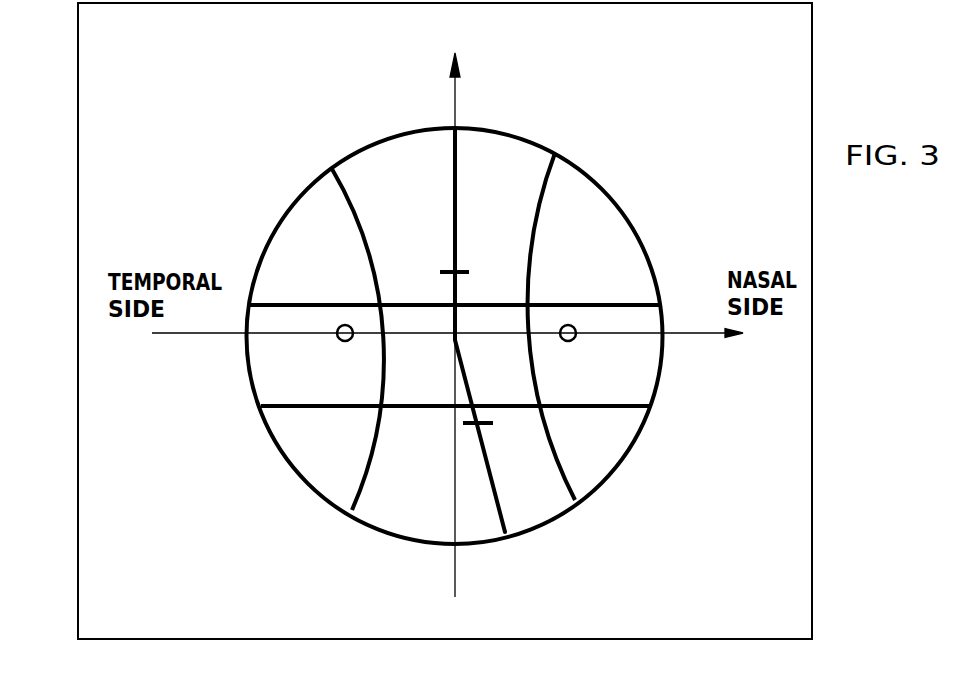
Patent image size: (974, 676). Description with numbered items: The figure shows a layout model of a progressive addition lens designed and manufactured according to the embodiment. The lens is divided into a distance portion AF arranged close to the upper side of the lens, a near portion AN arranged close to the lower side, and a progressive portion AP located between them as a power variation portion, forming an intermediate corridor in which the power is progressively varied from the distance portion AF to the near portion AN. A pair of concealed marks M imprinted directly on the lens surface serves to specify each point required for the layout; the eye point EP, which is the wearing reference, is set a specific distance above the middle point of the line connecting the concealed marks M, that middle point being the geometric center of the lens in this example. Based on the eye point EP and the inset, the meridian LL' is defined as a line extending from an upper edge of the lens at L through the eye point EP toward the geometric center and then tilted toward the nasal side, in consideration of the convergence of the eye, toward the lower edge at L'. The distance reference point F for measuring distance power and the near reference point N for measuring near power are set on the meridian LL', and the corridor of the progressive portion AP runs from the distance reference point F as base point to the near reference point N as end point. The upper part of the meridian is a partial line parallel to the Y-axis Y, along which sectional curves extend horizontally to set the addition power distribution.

The distance portion AF is at (525, 153).
The progressive portion AP is at (625, 318).
The near portion AN is at (535, 498).
The distance reference point F is at (457, 259).
The near reference point N is at (486, 439).
The eye point EP is at (444, 319).
The concealed marks M is at (456, 348).
The upper end of meridian L is at (464, 116).
The lower end of meridian L' is at (513, 547).
The meridian LL' is at (391, 312).
The Y-axis Y is at (459, 308).